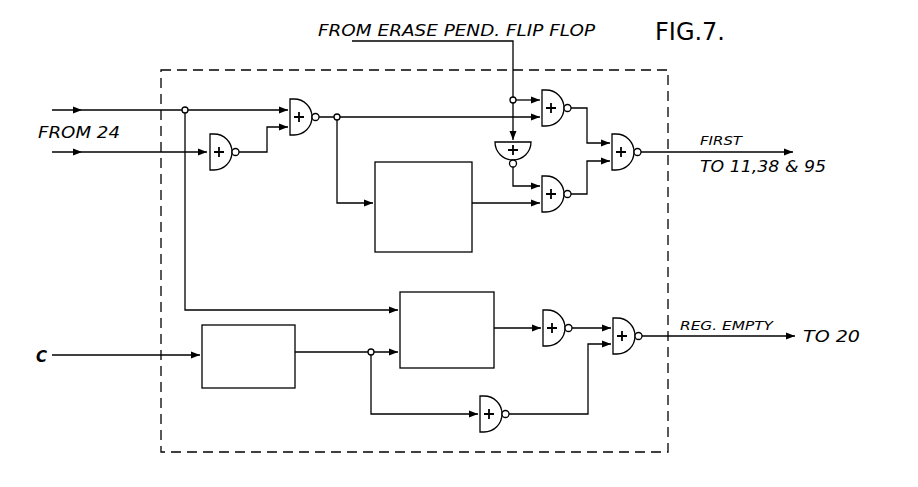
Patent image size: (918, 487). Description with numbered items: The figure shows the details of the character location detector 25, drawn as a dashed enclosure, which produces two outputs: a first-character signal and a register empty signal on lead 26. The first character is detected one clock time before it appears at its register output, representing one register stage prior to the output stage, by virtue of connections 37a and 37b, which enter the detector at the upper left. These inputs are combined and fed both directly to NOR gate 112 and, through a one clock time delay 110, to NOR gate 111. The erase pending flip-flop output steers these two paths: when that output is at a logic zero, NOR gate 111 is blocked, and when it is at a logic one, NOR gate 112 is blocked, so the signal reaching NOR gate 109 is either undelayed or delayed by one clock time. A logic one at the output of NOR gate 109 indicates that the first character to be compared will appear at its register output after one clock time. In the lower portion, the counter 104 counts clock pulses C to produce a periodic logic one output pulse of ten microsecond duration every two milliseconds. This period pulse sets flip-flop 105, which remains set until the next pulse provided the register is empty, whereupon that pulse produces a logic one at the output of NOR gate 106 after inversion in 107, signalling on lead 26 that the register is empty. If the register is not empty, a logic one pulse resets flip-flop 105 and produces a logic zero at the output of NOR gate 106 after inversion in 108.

The character location detector 25 is at (670, 103).
The register empty lead 26 is at (695, 338).
The register connection 37a is at (101, 108).
The register connection 37b is at (107, 155).
The counter 104 is at (248, 388).
The flip-flop 105 is at (471, 292).
The NOR gate 106 is at (624, 318).
The inverter (NOR gate) 107 is at (493, 401).
The inverter (NOR gate) 108 is at (551, 310).
The NOR gate 109 is at (625, 171).
The one clock time delay 110 is at (421, 160).
The NOR gate 111 is at (553, 173).
The NOR gate 112 is at (564, 97).